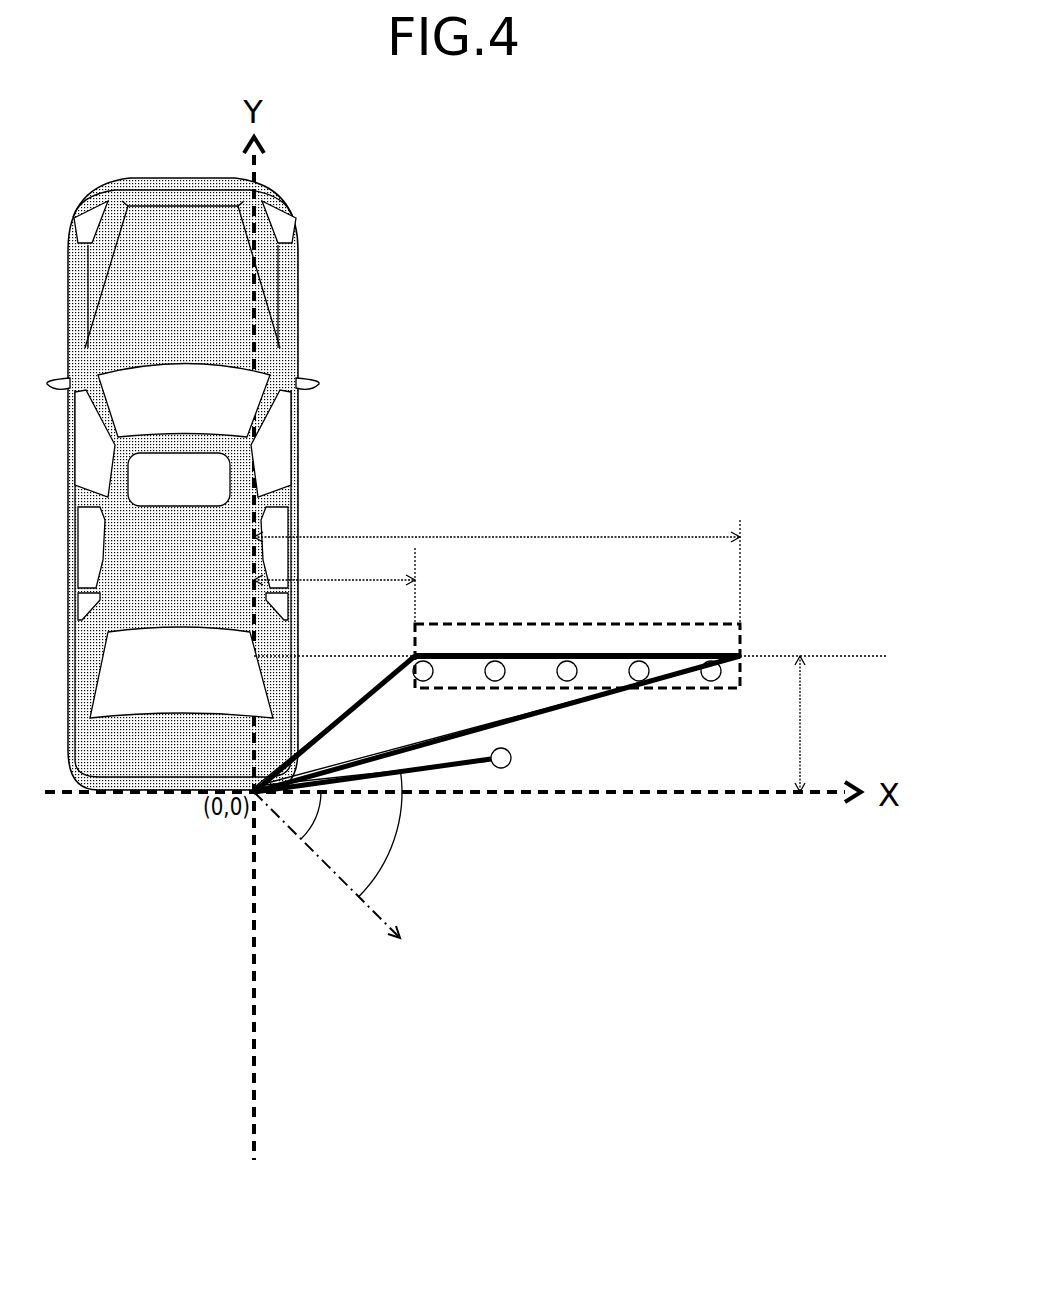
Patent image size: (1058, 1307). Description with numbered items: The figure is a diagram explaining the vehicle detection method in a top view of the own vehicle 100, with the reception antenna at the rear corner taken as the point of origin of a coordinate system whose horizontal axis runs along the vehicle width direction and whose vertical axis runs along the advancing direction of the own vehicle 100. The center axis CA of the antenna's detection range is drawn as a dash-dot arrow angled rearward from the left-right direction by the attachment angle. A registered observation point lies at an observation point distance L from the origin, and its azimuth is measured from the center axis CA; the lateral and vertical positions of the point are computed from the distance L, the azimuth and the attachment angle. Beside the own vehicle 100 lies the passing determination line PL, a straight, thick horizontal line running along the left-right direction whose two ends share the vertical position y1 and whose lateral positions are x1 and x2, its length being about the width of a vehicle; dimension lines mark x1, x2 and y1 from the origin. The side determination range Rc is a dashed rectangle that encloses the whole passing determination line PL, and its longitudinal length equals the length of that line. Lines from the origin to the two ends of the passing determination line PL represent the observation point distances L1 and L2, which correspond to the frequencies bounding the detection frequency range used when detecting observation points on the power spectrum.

The own vehicle 100 is at (299, 303).
The passing determination line PL is at (578, 652).
The side determination range Rc is at (651, 623).
The observation point distance of one end of the passing determination line L1 is at (345, 714).
The observation point distance of the other end of the passing determination line L2 is at (480, 729).
The observation point distance L is at (400, 775).
The center axis of the detection range CA is at (322, 862).
The lateral position of one end of the passing determination line x1 is at (334, 586).
The lateral position of the other end of the passing determination line x2 is at (497, 568).
The vertical position of the passing determination line y1 is at (814, 724).